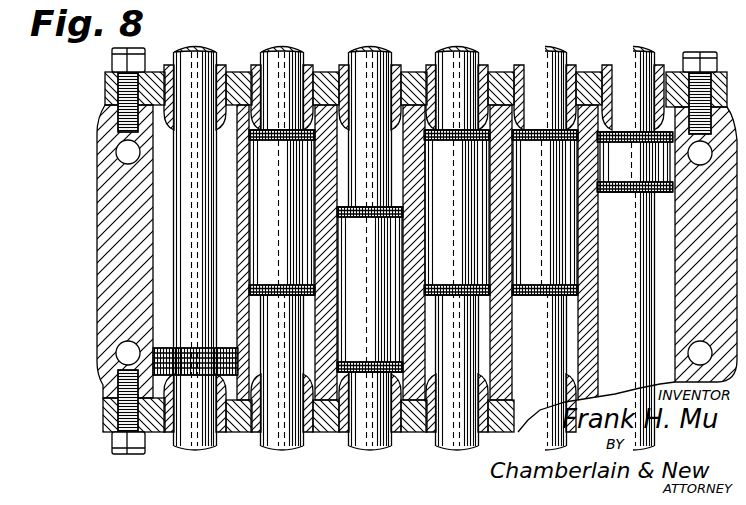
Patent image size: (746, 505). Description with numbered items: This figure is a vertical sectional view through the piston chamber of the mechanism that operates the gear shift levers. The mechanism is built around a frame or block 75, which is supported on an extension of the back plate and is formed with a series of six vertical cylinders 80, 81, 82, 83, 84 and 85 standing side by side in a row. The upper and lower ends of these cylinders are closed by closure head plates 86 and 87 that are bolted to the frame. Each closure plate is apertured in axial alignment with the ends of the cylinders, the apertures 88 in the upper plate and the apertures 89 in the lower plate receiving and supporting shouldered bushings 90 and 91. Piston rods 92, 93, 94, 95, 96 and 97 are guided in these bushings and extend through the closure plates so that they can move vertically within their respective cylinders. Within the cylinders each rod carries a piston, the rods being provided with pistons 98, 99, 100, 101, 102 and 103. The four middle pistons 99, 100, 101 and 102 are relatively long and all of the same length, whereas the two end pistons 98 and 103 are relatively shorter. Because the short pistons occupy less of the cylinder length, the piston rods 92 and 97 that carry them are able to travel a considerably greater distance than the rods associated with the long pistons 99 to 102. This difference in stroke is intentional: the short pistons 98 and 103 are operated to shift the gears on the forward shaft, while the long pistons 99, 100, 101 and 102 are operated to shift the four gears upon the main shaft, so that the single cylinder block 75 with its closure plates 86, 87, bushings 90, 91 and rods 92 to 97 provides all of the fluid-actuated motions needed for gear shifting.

The frame or block 75 is at (108, 226).
The vertical cylinder 80 is at (696, 217).
The vertical cylinder 81 is at (581, 252).
The vertical cylinder 82 is at (492, 252).
The vertical cylinder 83 is at (406, 252).
The vertical cylinder 84 is at (319, 252).
The vertical cylinder 85 is at (233, 252).
The closure head plate 86 is at (230, 78).
The closure head plate 87 is at (240, 430).
The aperture 88 is at (320, 73).
The aperture 89 is at (318, 433).
The shouldered bushing 90 is at (396, 65).
The shouldered bushing 91 is at (399, 433).
The piston rod 92 is at (654, 55).
The piston rod 93 is at (563, 59).
The piston rod 94 is at (475, 55).
The piston rod 95 is at (364, 54).
The piston rod 96 is at (273, 49).
The piston rod 97 is at (201, 49).
The piston 98 is at (635, 162).
The piston 99 is at (545, 212).
The piston 100 is at (432, 225).
The piston 101 is at (374, 281).
The piston 102 is at (284, 245).
The piston 103 is at (158, 345).